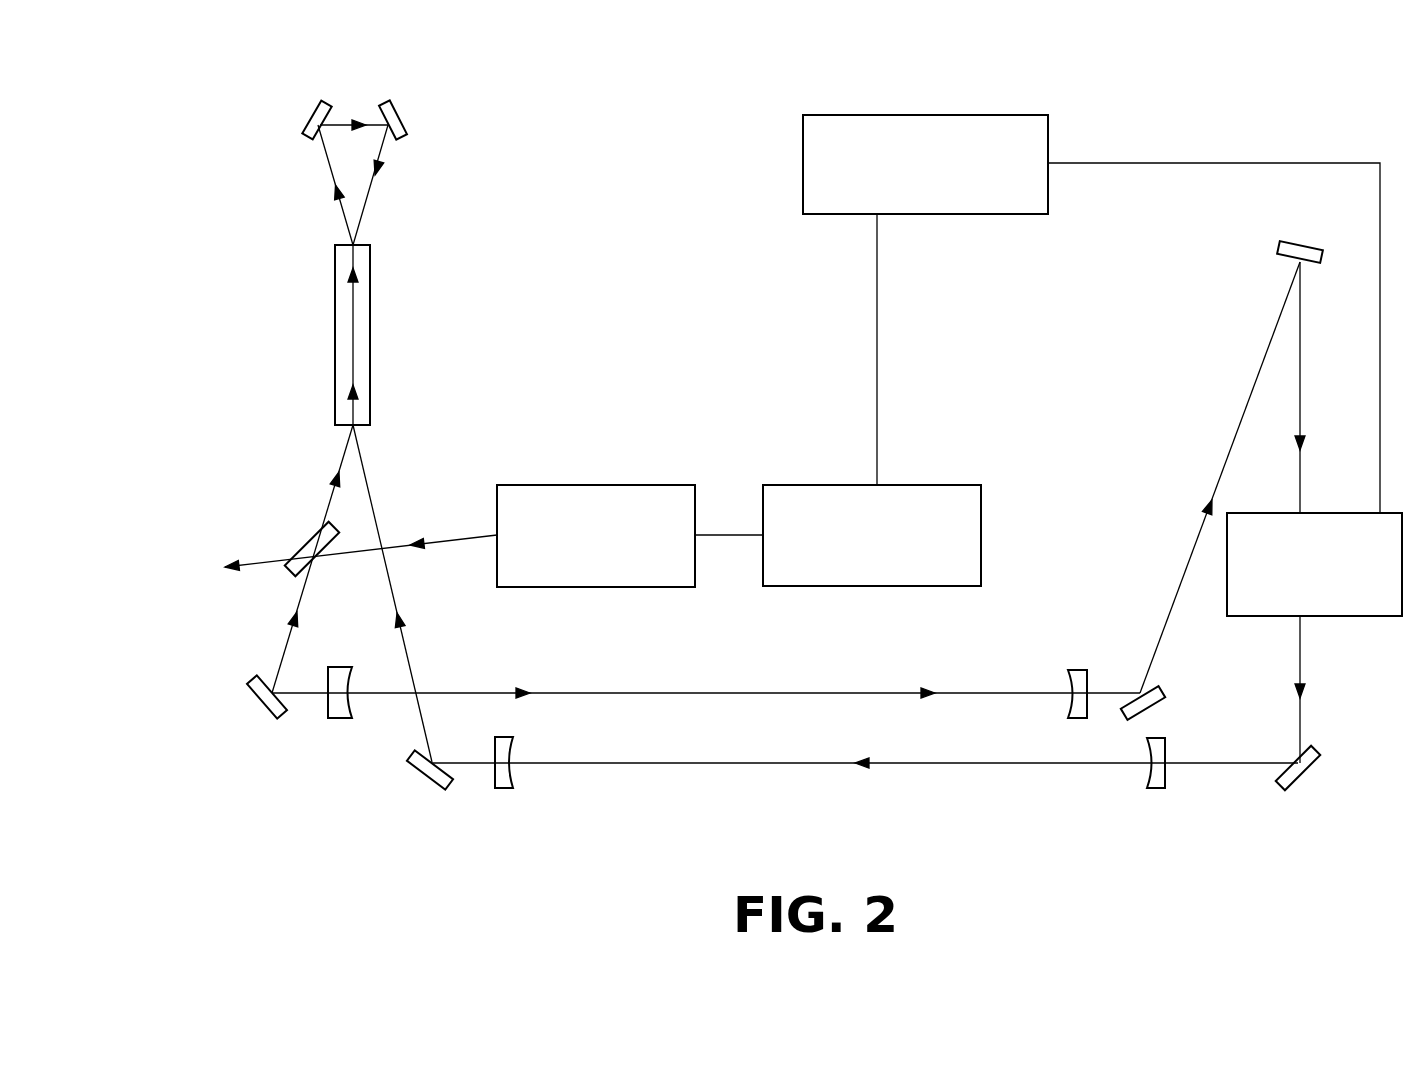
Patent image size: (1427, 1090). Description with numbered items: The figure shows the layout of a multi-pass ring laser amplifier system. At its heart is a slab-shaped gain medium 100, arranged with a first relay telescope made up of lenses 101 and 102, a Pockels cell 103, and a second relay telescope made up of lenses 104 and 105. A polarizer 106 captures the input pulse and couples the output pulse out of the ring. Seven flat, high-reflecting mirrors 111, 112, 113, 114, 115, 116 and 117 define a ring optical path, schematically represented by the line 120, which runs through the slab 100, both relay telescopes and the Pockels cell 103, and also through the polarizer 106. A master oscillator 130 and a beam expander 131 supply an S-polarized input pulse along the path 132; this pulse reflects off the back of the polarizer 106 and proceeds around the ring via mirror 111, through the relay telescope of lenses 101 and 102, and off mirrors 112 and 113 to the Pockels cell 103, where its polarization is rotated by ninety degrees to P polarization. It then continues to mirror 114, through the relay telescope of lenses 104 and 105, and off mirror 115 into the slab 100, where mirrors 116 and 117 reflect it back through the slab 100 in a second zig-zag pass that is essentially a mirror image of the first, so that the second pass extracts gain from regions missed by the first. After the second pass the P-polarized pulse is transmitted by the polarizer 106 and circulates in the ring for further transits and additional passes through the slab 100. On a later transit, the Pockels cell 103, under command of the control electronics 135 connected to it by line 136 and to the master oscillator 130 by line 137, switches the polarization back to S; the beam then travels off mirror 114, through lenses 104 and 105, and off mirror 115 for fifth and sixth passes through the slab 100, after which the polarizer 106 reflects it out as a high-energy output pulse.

The slab-shaped gain medium 100 is at (372, 335).
The lens 101 is at (338, 719).
The lens 102 is at (1079, 670).
The Pockels cell 103 is at (1303, 605).
The lens 104 is at (1156, 789).
The lens 105 is at (505, 789).
The polarizer 106 is at (300, 550).
The flat high reflecting mirror 111 is at (262, 708).
The flat high reflecting mirror 112 is at (1155, 702).
The flat high reflecting mirror 113 is at (1305, 243).
The flat high reflecting mirror 114 is at (1316, 762).
The flat high reflecting mirror 115 is at (422, 776).
The flat high reflecting mirror 116 is at (305, 122).
The flat high reflecting mirror 117 is at (405, 115).
The optical path 120 is at (926, 765).
The master oscillator 130 is at (850, 577).
The beam expander 131 is at (574, 577).
The path 132 is at (440, 540).
The control electronics 135 is at (884, 205).
The control line to Pockels cell 136 is at (1236, 162).
The control line to master oscillator 137 is at (877, 345).